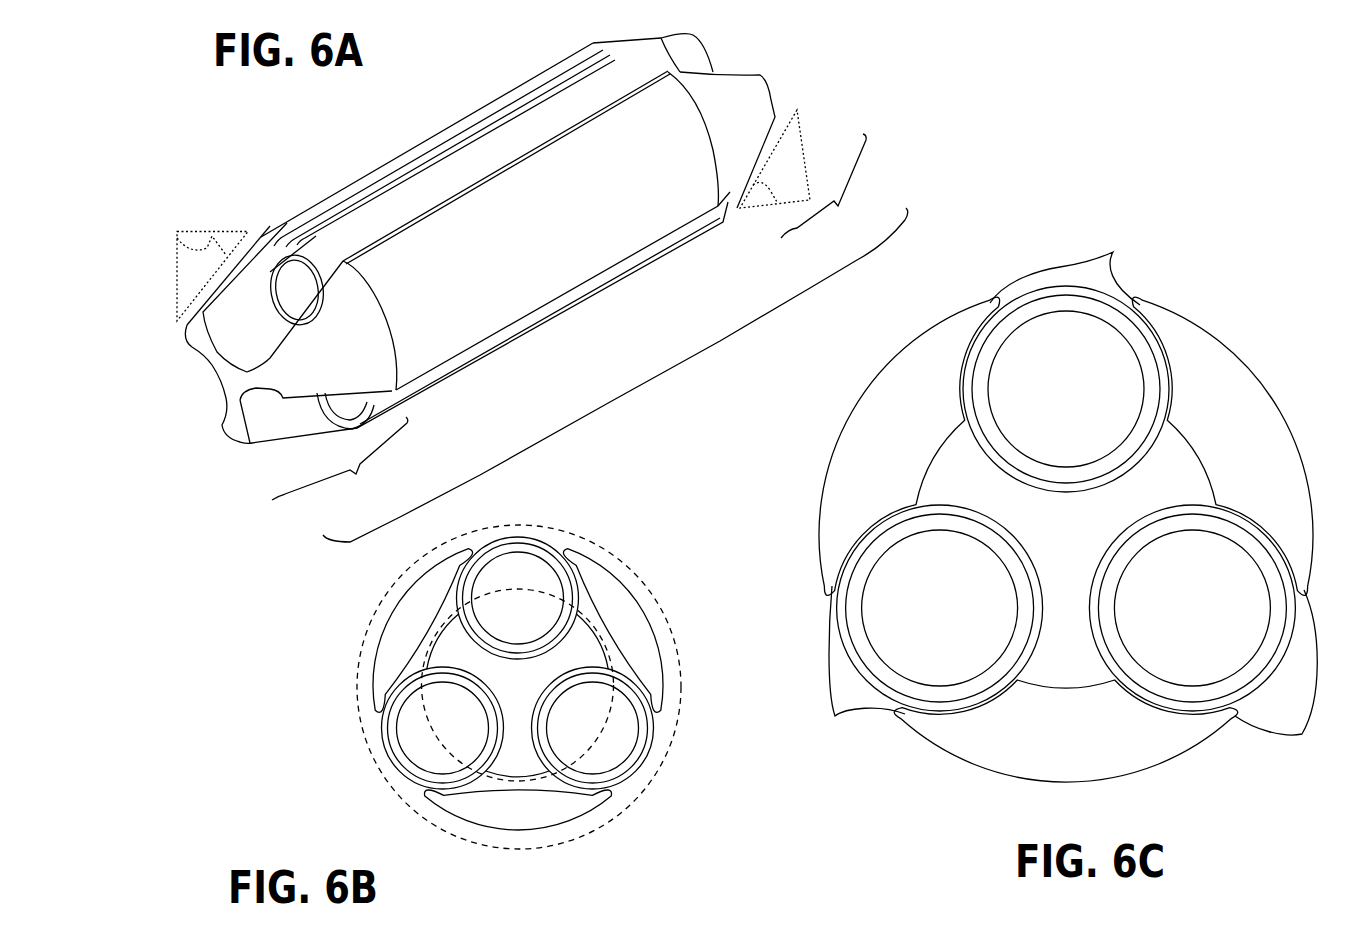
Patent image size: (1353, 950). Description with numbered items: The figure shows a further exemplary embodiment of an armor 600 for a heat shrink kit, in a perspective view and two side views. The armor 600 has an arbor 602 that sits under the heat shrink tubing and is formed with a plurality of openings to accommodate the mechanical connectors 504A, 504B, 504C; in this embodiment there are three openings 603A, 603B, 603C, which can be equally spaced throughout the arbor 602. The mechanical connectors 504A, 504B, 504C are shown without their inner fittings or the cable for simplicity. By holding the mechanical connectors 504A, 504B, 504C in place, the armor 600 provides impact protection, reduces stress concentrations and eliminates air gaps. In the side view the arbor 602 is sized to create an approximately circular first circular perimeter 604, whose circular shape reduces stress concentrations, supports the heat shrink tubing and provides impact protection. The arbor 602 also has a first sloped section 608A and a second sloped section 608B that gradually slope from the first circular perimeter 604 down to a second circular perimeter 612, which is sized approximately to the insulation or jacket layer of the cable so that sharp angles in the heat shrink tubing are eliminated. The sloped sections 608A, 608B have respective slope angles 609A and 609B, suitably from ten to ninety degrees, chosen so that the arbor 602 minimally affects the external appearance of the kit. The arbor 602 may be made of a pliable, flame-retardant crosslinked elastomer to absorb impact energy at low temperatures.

In FIG. 6B, the armor 600 is at (551, 625).
In FIG. 6A, the arbor 602 is at (444, 130).
In FIG. 6C, the arbor 602 is at (1195, 300).
In FIG. 6C, the opening 603A is at (835, 716).
In FIG. 6C, the opening 603B is at (1113, 252).
In FIG. 6C, the opening 603C is at (1302, 736).
In FIG. 6C, the mechanical connector 504A is at (948, 531).
In FIG. 6C, the mechanical connector 504B is at (1083, 312).
In FIG. 6C, the mechanical connector 504C is at (1236, 531).
In FIG. 6B, the first circular perimeter 604 is at (640, 570).
In FIG. 6A, the first sloped section 608A is at (356, 475).
In FIG. 6A, the second sloped section 608B is at (839, 206).
In FIG. 6A, the slope angle 609A is at (170, 236).
In FIG. 6A, the slope angle 609B is at (777, 202).
In FIG. 6B, the second circular perimeter 612 is at (437, 628).